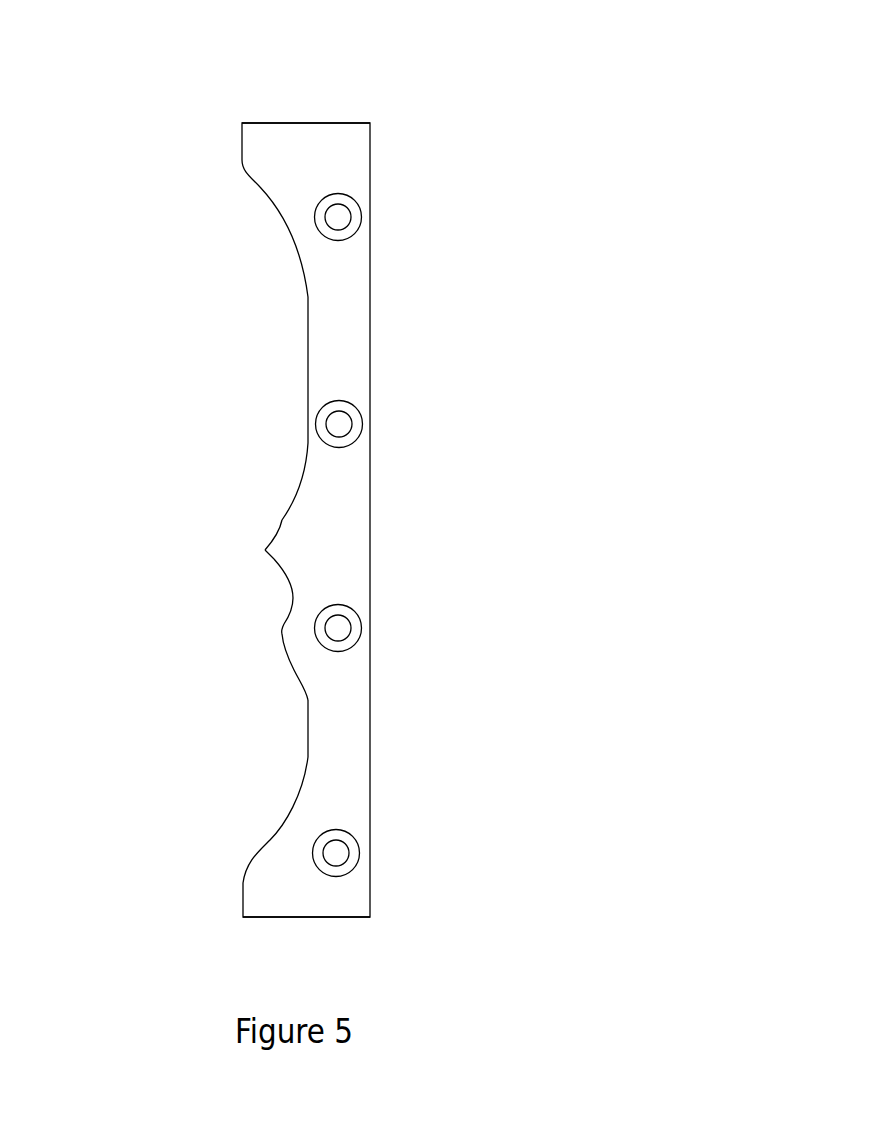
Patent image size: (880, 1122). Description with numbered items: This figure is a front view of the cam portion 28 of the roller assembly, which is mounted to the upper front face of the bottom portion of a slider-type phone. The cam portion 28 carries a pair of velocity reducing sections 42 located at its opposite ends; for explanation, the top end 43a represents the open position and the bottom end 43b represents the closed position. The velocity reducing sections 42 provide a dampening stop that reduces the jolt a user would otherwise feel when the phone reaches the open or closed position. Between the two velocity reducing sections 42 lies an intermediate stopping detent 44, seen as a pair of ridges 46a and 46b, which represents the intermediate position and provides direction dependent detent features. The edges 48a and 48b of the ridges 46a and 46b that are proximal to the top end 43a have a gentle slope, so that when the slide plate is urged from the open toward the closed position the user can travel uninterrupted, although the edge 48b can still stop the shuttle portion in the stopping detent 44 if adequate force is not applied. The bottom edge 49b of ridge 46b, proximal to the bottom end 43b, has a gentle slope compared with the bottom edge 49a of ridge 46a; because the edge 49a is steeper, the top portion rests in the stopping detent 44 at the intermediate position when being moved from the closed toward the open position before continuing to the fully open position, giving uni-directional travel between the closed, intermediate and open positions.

The cam portion 28 is at (506, 141).
The velocity reducing sections 42 is at (255, 200).
The top end 43a is at (280, 105).
The bottom end 43b is at (350, 913).
The intermediate stopping detent 44 is at (212, 575).
The ridge 46a is at (252, 545).
The ridge 46b is at (270, 634).
The edge 48a is at (281, 530).
The edge 48b is at (282, 614).
The bottom edge 49a is at (277, 573).
The bottom edge 49b is at (283, 650).